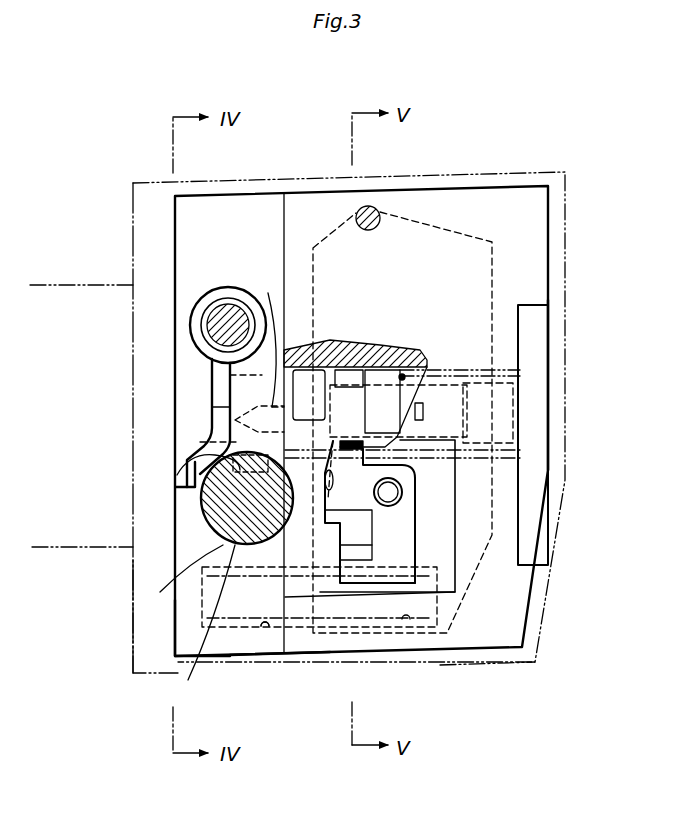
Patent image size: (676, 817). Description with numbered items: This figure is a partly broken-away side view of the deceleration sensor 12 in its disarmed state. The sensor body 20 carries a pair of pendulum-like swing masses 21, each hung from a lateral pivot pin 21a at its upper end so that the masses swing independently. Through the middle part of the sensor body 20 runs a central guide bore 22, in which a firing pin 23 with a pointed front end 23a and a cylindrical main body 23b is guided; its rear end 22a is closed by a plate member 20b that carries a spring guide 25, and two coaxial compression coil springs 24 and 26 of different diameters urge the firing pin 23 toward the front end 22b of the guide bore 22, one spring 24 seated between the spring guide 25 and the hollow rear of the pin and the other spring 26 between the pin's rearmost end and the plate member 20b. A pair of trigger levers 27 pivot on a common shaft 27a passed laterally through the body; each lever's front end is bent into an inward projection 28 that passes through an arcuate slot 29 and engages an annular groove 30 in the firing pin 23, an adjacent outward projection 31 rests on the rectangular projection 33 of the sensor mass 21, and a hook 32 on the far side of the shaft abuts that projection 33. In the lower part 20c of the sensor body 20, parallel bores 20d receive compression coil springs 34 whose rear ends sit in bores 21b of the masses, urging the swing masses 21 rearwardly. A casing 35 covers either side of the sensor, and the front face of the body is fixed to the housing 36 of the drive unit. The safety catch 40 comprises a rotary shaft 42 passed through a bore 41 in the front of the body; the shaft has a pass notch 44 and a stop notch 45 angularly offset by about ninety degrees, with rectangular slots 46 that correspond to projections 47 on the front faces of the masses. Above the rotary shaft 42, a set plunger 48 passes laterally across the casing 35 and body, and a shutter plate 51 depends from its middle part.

The deceleration sensor 12 is at (544, 139).
The sensor body 20 is at (327, 208).
The plate member 20b is at (540, 348).
The lower part of the sensor body 20c is at (220, 656).
The parallel bores 20d is at (265, 658).
The swing mass 21 is at (472, 234).
The lateral pivot pin 21a is at (371, 208).
The bore of the sensor mass 21b is at (404, 620).
The central guide bore 22 is at (258, 378).
The rear end of the guide bore 22a is at (512, 460).
The front end of the guide bore 22b is at (180, 471).
The firing pin 23 is at (347, 378).
The pointed front end 23a is at (263, 337).
The slider block 23b is at (388, 375).
The compression coil spring 24 is at (448, 390).
The spring guide 25 is at (483, 385).
The compression coil spring 26 is at (502, 367).
The trigger lever 27 is at (408, 512).
The common shaft 27a is at (415, 498).
The inward projection 28 is at (404, 489).
The arcuate slot 29 is at (268, 624).
The annular groove 30 is at (333, 350).
The outward projection 31 is at (348, 518).
The hook 32 is at (352, 592).
The rectangular projection 33 is at (372, 545).
The compression coil spring 34 is at (305, 620).
The casing 35 is at (459, 666).
The housing 36 is at (133, 590).
The safety catch 40 is at (196, 513).
The bore 41 is at (200, 624).
The rotary shaft 42 is at (180, 578).
The pass notch 44 is at (220, 500).
The stop notch 45 is at (238, 423).
The rectangular slots 46 is at (212, 441).
The projections 47 is at (285, 545).
The set plunger 48 is at (208, 320).
The shutter plate 51 is at (200, 454).